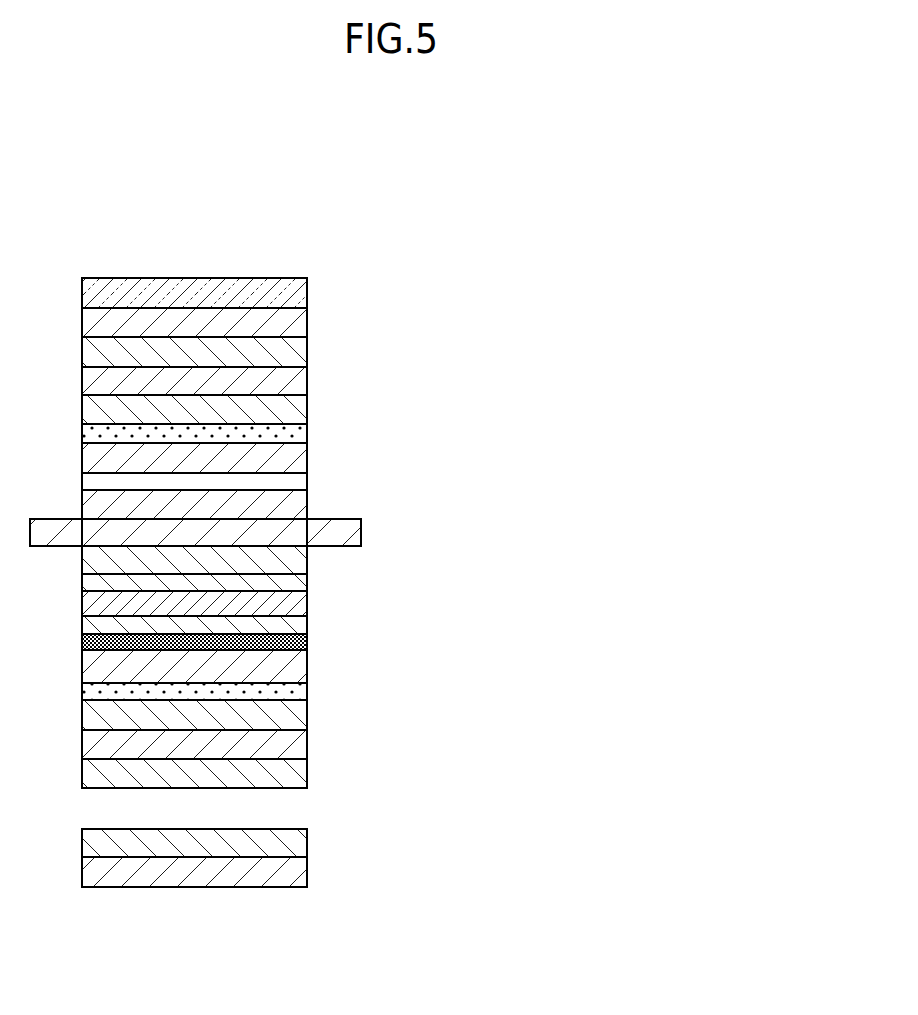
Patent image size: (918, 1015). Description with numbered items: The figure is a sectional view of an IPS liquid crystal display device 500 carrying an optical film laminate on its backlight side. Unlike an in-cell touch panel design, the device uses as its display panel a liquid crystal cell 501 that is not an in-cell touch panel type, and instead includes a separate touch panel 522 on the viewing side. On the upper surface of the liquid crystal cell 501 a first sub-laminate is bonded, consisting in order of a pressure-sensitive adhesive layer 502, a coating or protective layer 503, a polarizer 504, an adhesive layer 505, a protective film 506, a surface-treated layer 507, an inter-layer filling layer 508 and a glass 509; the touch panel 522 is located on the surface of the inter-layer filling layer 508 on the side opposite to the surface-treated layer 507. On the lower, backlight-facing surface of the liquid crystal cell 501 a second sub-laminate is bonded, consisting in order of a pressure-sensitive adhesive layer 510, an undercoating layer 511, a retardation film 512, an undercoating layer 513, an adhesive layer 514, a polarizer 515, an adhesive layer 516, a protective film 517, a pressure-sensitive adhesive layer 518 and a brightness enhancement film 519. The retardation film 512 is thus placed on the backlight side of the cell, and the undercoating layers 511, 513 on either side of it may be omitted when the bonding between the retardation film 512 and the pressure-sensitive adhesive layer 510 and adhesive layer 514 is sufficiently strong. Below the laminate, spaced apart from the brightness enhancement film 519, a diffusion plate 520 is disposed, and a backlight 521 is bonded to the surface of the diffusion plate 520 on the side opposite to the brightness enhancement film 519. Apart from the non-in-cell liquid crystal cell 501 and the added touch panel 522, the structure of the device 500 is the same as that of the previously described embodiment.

The IPS liquid crystal display device 500 is at (235, 253).
The liquid crystal cell 501 is at (361, 532).
The pressure-sensitive adhesive layer 502 is at (307, 505).
The coating or protective layer 503 is at (307, 482).
The polarizer 504 is at (307, 458).
The adhesive layer 505 is at (307, 434).
The protective film 506 is at (307, 410).
The surface-treated layer 507 is at (307, 381).
The inter-layer filling layer 508 is at (307, 352).
The glass 509 is at (307, 280).
The pressure-sensitive adhesive layer 510 is at (307, 560).
The undercoating layer 511 is at (307, 583).
The retardation film 512 is at (307, 604).
The undercoating layer 513 is at (307, 625).
The adhesive layer 514 is at (307, 642).
The polarizer 515 is at (307, 667).
The adhesive layer 516 is at (307, 692).
The protective film 517 is at (307, 715).
The pressure-sensitive adhesive layer 518 is at (307, 745).
The brightness enhancement film 519 is at (307, 774).
The diffusion plate 520 is at (307, 843).
The backlight 521 is at (307, 872).
The touch panel 522 is at (307, 322).